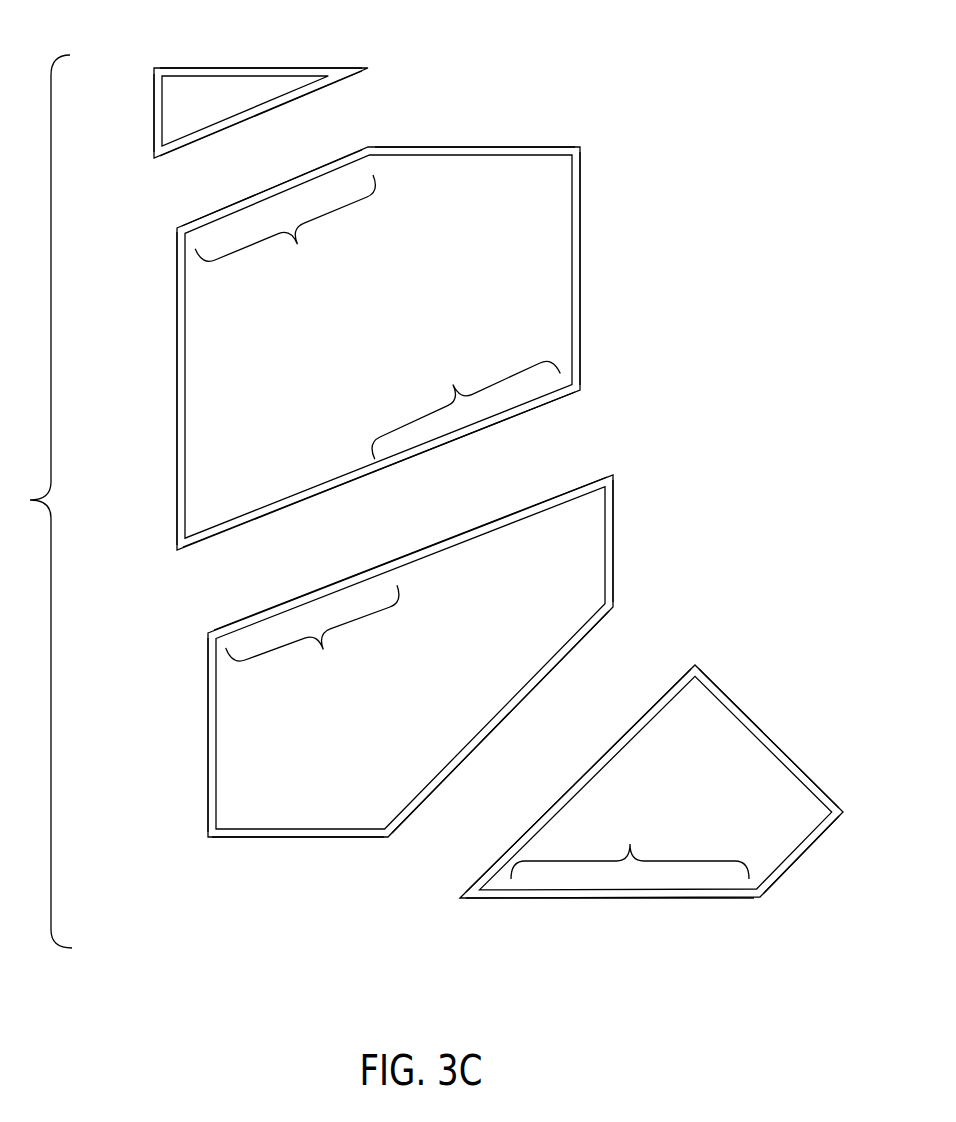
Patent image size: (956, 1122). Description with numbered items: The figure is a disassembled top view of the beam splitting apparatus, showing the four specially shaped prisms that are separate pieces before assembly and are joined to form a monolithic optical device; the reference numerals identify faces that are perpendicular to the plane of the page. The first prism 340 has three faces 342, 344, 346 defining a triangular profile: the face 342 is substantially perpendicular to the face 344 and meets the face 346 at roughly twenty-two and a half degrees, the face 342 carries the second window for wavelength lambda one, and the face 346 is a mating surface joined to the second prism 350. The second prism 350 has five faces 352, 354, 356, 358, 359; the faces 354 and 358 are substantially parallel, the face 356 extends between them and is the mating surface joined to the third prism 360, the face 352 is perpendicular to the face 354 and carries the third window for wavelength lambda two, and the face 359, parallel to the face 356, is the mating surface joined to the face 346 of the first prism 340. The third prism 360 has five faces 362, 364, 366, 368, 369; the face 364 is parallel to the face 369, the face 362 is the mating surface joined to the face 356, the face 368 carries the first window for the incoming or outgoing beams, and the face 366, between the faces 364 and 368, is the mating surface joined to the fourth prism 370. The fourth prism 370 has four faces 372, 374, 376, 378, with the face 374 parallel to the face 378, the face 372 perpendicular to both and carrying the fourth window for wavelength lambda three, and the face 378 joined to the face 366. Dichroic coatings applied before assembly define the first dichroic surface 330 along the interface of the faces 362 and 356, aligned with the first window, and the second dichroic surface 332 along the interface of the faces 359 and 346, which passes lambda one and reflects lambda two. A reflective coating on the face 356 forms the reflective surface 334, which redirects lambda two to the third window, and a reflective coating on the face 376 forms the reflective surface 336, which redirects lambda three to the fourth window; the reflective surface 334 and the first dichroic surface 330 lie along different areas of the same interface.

The first dichroic surface 330 is at (312, 632).
The second dichroic surface 332 is at (285, 227).
The reflective surface 334 is at (466, 404).
The reflective surface 336 is at (630, 845).
The first prism 340 is at (150, 93).
The face 342 is at (300, 66).
The face 344 is at (153, 125).
The face 346 is at (272, 110).
The second prism 350 is at (587, 182).
The face 352 is at (560, 146).
The face 354 is at (582, 245).
The face 356 is at (433, 450).
The face 358 is at (176, 360).
The face 359 is at (265, 192).
The third prism 360 is at (622, 515).
The face 362 is at (533, 505).
The face 364 is at (617, 548).
The face 366 is at (495, 727).
The face 368 is at (303, 838).
The face 369 is at (207, 723).
The fourth prism 370 is at (833, 830).
The face 372 is at (768, 737).
The face 374 is at (793, 865).
The face 376 is at (652, 900).
The face 378 is at (602, 757).